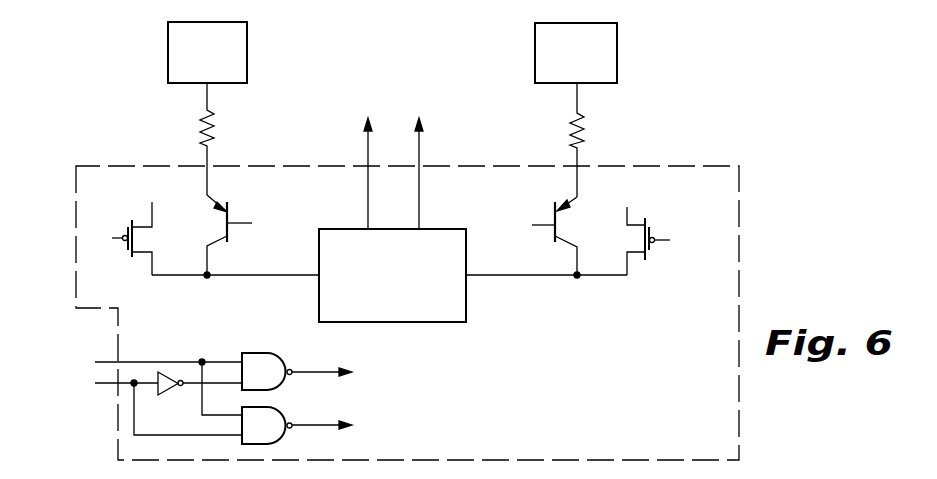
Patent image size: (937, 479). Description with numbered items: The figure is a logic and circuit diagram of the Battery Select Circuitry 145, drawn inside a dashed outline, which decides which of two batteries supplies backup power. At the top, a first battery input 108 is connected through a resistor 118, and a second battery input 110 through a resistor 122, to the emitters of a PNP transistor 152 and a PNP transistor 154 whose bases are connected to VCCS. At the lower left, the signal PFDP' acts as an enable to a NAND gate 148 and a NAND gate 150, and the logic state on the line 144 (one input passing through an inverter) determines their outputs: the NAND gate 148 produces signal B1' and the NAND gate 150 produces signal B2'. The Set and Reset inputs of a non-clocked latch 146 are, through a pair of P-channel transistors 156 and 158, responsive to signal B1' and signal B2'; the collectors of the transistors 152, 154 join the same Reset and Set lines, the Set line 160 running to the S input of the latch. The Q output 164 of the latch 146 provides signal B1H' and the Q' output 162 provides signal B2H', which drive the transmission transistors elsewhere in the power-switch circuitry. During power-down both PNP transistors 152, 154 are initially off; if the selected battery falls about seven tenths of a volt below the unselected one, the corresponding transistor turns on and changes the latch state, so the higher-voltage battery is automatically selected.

The first battery input 108 is at (247, 73).
The second battery input 110 is at (617, 70).
The resistor 118 is at (212, 117).
The resistor 122 is at (583, 118).
The line 144 is at (132, 393).
The Battery Select Circuitry 145 is at (407, 313).
The non-clocked latch 146 is at (440, 323).
The NAND gate 148 is at (293, 345).
The NAND gate 150 is at (285, 408).
The PNP transistor 152 is at (218, 223).
The PNP transistor 154 is at (574, 220).
The P-channel transistor 156 is at (156, 238).
The P-channel transistor 158 is at (628, 238).
The set input line 160 is at (534, 278).
The Q' output 162 is at (422, 228).
The Q output 164 is at (367, 228).